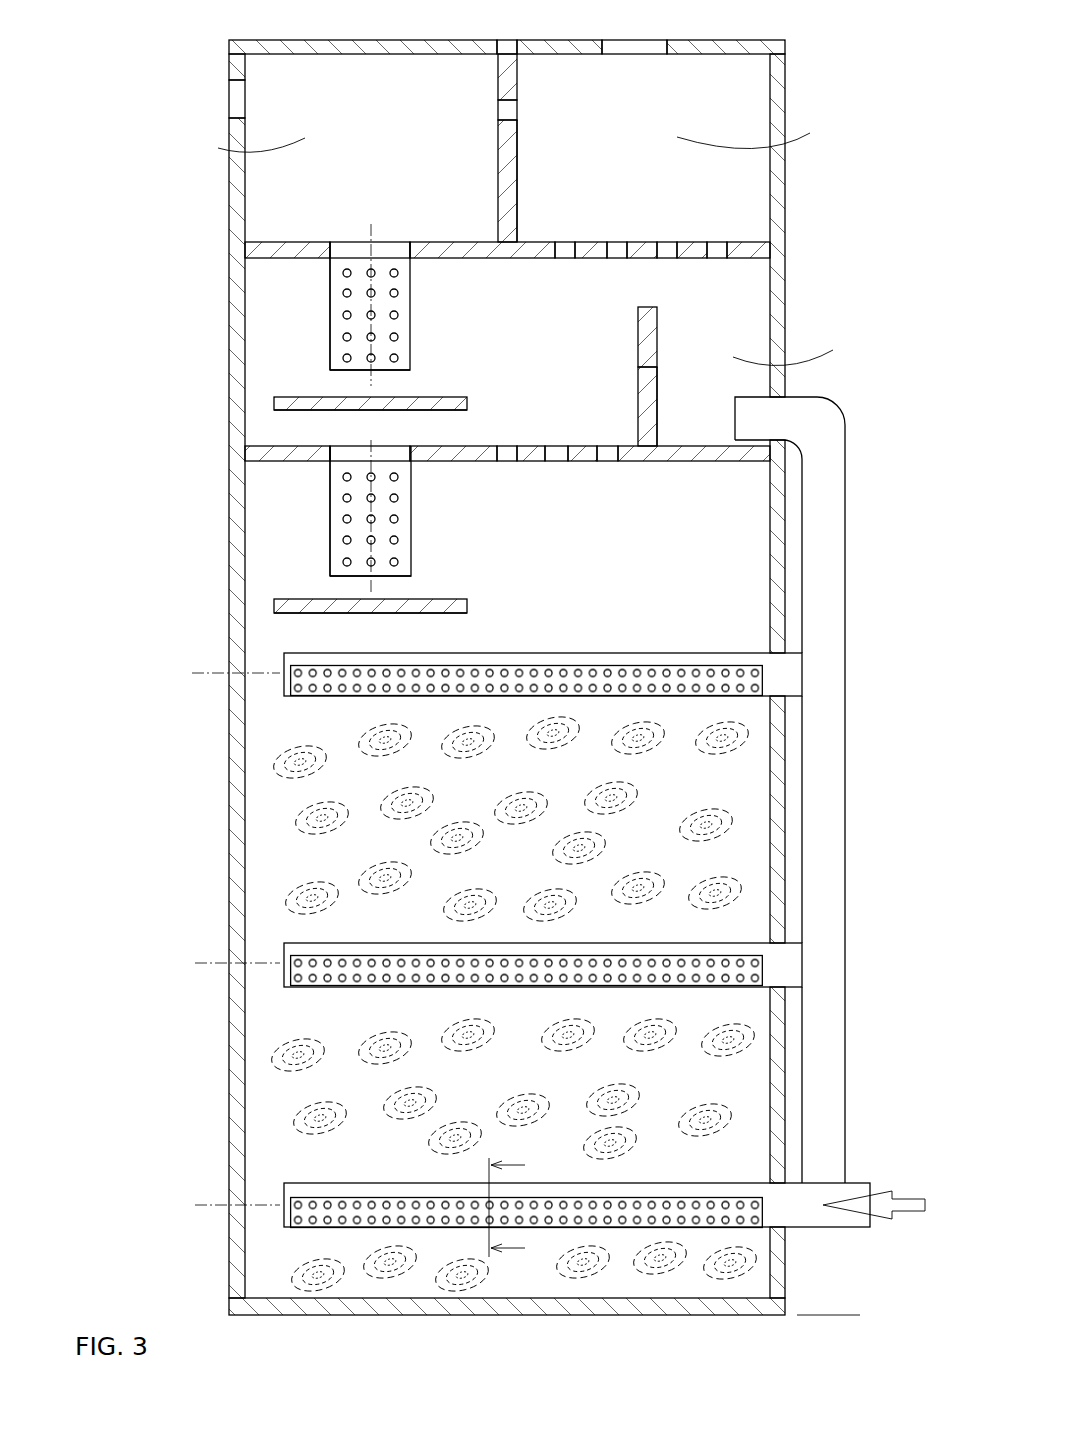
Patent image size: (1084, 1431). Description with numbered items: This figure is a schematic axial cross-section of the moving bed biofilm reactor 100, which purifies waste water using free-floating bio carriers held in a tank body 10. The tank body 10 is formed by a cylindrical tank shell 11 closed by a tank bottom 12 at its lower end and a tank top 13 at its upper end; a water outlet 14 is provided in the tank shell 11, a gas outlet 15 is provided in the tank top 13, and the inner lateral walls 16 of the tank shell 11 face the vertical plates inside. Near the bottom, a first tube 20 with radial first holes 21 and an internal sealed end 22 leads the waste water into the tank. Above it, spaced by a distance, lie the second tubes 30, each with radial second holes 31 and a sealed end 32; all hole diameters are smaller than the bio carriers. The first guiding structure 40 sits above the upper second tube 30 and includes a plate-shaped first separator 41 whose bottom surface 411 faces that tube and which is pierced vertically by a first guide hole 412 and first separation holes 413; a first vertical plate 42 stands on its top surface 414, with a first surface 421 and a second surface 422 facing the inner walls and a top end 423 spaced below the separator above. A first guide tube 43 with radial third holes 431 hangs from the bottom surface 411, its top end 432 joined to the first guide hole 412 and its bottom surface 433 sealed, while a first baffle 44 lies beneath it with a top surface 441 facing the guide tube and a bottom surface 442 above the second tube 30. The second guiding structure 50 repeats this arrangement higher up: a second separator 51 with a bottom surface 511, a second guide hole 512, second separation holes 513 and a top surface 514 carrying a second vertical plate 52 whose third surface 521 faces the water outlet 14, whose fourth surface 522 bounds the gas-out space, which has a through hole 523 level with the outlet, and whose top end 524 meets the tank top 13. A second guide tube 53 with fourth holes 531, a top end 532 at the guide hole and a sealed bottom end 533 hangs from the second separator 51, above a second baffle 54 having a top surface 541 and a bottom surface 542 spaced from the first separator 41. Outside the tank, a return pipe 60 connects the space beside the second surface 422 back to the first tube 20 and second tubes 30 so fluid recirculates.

The moving bed biofilm reactor 100 is at (184, 38).
The tank body 10 is at (787, 92).
The tank shell 11 is at (787, 196).
The tank bottom 12 is at (546, 1312).
The tank top 13 is at (362, 45).
The water outlet 14 is at (236, 98).
The gas outlet 15 is at (633, 45).
The inner lateral walls 16 is at (769, 318).
The first tube 20 is at (294, 1184).
The first holes 21 is at (355, 1207).
The sealed end 22 is at (282, 1212).
The second tube 30 is at (294, 654).
The second holes 31 is at (546, 673).
The sealed end 32 is at (283, 680).
The first guiding structure 40 is at (268, 531).
The first separator 41 is at (692, 462).
The bottom surface 411 is at (532, 462).
The first guide hole 412 is at (405, 462).
The first separation holes 413 is at (605, 462).
The top surface 414 is at (582, 446).
The first vertical plate 42 is at (638, 340).
The first surface 421 is at (638, 385).
The second surface 422 is at (658, 410).
The top end 423 is at (648, 306).
The first guide tube 43 is at (404, 527).
The third holes 431 is at (331, 503).
The top end 432 is at (348, 460).
The bottom surface 433 is at (348, 577).
The first baffle 44 is at (467, 607).
The top surface 441 is at (438, 599).
The bottom surface 442 is at (440, 614).
The second guiding structure 50 is at (268, 331).
The second separator 51 is at (498, 259).
The bottom surface 511 is at (284, 259).
The second guide hole 512 is at (393, 246).
The second separation holes 513 is at (718, 247).
The top surface 514 is at (648, 247).
The second vertical plate 52 is at (497, 132).
The third surface 521 is at (498, 168).
The fourth surface 522 is at (517, 167).
The through hole 523 is at (517, 108).
The top end 524 is at (503, 45).
The second guide tube 53 is at (403, 323).
The fourth holes 531 is at (407, 297).
The top end 532 is at (349, 260).
The bottom end 533 is at (352, 371).
The second baffle 54 is at (467, 403).
The top surface 541 is at (440, 397).
The bottom surface 542 is at (418, 411).
The return pipe 60 is at (847, 580).